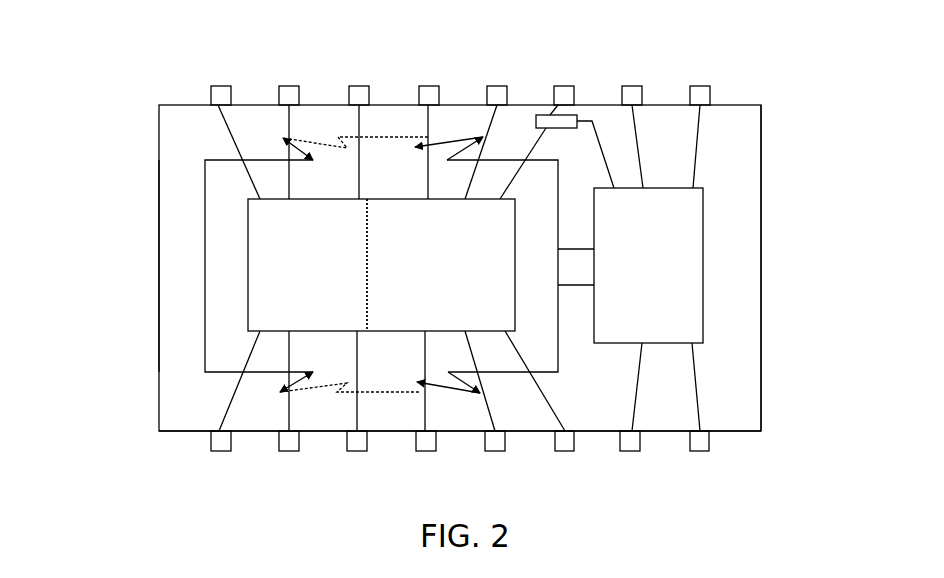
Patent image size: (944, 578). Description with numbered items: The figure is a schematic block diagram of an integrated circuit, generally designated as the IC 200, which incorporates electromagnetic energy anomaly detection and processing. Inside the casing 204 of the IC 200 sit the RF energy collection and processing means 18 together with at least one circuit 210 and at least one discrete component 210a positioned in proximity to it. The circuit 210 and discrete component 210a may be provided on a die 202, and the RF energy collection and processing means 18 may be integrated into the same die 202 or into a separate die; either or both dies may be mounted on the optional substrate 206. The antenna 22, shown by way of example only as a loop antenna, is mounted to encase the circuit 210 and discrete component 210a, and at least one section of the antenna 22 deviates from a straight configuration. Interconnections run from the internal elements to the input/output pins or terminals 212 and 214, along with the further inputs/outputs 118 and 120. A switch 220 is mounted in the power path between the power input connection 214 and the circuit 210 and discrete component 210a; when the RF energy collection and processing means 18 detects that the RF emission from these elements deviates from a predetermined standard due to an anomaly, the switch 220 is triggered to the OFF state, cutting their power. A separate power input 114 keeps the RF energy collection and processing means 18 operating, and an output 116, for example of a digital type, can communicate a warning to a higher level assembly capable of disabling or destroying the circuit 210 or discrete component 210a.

The RF energy collection and processing means 18 is at (717, 278).
The antenna 22 is at (334, 265).
The separate power input 114 is at (627, 84).
The output 116 is at (695, 84).
The input/output 118 is at (626, 455).
The input/output 120 is at (697, 455).
The IC 200 is at (150, 433).
The die 202 is at (410, 268).
The casing 204 is at (160, 225).
The substrate 206 is at (800, 268).
The circuit 210 is at (381, 184).
The discrete component 210a is at (428, 165).
The input/output pins or terminals 212 is at (227, 452).
The power input connection 214 is at (553, 103).
The switch 220 is at (536, 118).